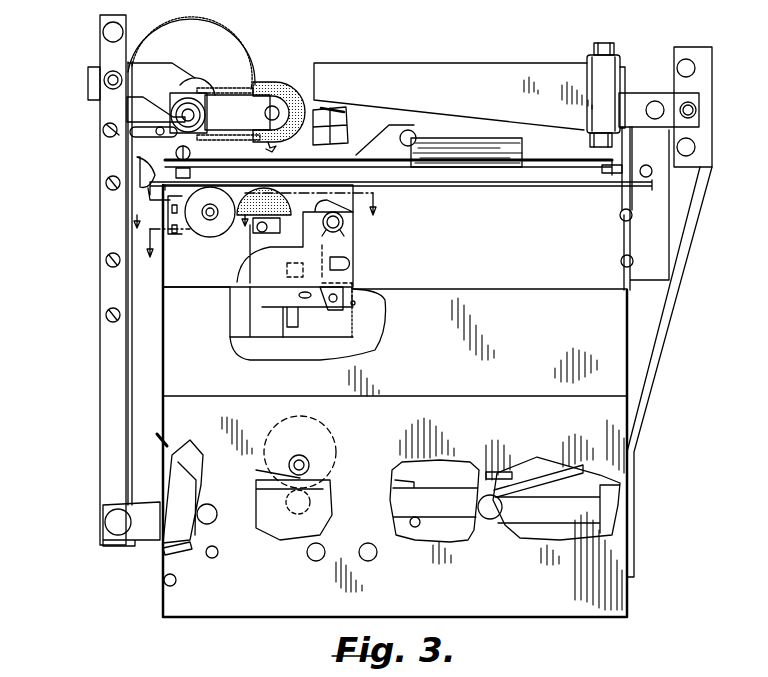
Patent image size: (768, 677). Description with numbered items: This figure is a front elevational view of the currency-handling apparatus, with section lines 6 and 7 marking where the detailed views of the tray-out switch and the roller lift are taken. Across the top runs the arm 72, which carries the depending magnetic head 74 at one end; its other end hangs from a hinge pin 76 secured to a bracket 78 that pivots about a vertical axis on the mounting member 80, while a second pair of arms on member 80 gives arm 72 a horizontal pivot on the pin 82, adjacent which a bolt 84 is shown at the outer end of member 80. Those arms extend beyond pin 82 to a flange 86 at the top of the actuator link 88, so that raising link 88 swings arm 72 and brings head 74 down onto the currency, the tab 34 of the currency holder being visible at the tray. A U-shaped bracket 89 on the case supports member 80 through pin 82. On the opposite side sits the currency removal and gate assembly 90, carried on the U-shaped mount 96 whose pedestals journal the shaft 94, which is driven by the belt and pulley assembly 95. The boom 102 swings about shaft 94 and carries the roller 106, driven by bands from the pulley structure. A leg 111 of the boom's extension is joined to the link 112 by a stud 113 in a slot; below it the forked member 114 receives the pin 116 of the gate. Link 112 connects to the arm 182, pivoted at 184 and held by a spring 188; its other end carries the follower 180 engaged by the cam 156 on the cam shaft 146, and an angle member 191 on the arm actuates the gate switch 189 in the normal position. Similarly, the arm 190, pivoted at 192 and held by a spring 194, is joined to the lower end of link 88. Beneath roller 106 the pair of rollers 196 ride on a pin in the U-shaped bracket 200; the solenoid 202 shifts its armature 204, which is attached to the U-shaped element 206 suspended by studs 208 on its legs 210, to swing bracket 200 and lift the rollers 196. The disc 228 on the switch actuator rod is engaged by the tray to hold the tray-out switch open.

The leg 111 is at (130, 66).
The link 112 is at (108, 295).
The stud 113 is at (104, 84).
The forked member 114 is at (150, 125).
The pin 116 is at (158, 134).
The U-shaped mount 96 is at (150, 190).
The currency removal and gate assembly 90 is at (192, 60).
The belt and pulley assembly 95 is at (205, 60).
The shaft 94 is at (196, 106).
The boom 102 is at (232, 100).
The roller 106 is at (280, 95).
The rollers 196 is at (250, 195).
The section line 7— 7 is at (261, 248).
The section line 6— 6 is at (198, 215).
The disc 228 is at (207, 228).
The U-shaped bracket 200 is at (287, 240).
The studs 208 is at (343, 228).
The legs 210 is at (350, 265).
The solenoid 202 is at (232, 308).
The armature 204 is at (283, 315).
The U-shaped element 206 is at (356, 303).
The arm 72 is at (447, 62).
The magnetic head 74 is at (344, 117).
The tab 34 is at (486, 137).
The bracket 78 is at (609, 67).
The hinge pin 76 is at (606, 43).
The mounting member 80 is at (639, 94).
The bolt 84 is at (697, 107).
The flange 86 is at (705, 65).
The actuator link 88 is at (694, 268).
The pin 82 is at (634, 127).
The U-shaped bracket 89 is at (628, 132).
The arm 182 is at (143, 528).
The pivot point 184 is at (210, 500).
The angle member 191 is at (214, 525).
The gate switch 189 is at (186, 550).
The spring 188 is at (189, 435).
The follower 180 is at (316, 517).
The shaft 146 is at (297, 456).
The cam 156 is at (336, 432).
The arm 190 is at (452, 519).
The pivot point 192 is at (500, 520).
The spring 194 is at (553, 457).